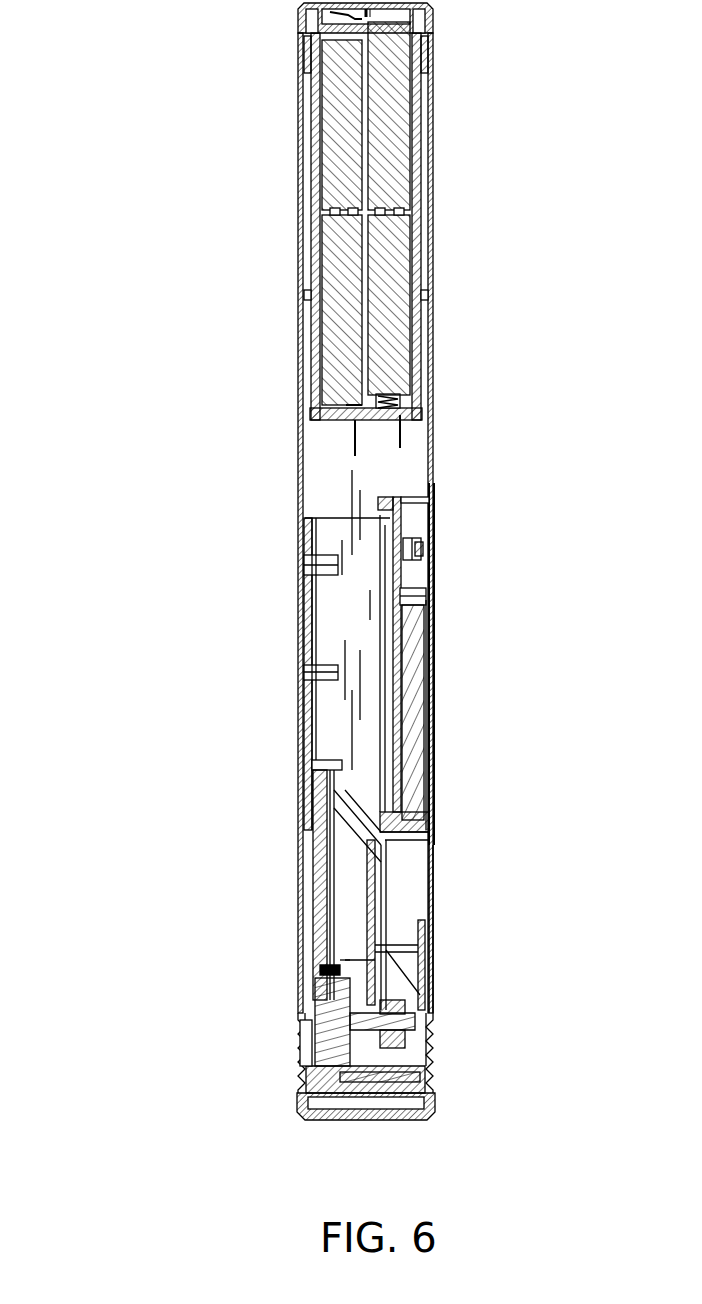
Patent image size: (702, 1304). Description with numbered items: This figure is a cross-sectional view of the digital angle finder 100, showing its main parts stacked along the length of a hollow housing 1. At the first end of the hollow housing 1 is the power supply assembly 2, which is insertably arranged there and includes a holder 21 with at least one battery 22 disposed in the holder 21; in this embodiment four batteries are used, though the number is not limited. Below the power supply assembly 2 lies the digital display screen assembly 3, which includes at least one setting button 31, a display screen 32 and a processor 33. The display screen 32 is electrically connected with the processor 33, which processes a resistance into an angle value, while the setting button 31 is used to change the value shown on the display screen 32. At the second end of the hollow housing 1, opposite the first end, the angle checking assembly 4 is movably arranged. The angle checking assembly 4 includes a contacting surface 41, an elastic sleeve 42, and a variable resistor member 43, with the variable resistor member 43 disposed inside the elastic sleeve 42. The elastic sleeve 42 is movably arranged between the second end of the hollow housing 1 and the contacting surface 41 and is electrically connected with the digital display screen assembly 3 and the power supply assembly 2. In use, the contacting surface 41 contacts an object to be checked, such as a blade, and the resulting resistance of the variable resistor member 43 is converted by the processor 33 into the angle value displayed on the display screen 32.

The digital angle finder 100 is at (160, 240).
The hollow housing 1 is at (434, 222).
The power supply assembly 2 is at (436, 22).
The holder 21 is at (311, 88).
The battery 22 is at (332, 145).
The digital display screen assembly 3 is at (434, 683).
The setting button 31 is at (410, 550).
The display screen 32 is at (412, 775).
The processor 33 is at (412, 605).
The angle checking assembly 4 is at (436, 1052).
The contacting surface 41 is at (385, 1120).
The elastic sleeve 42 is at (305, 1032).
The variable resistor member 43 is at (430, 915).